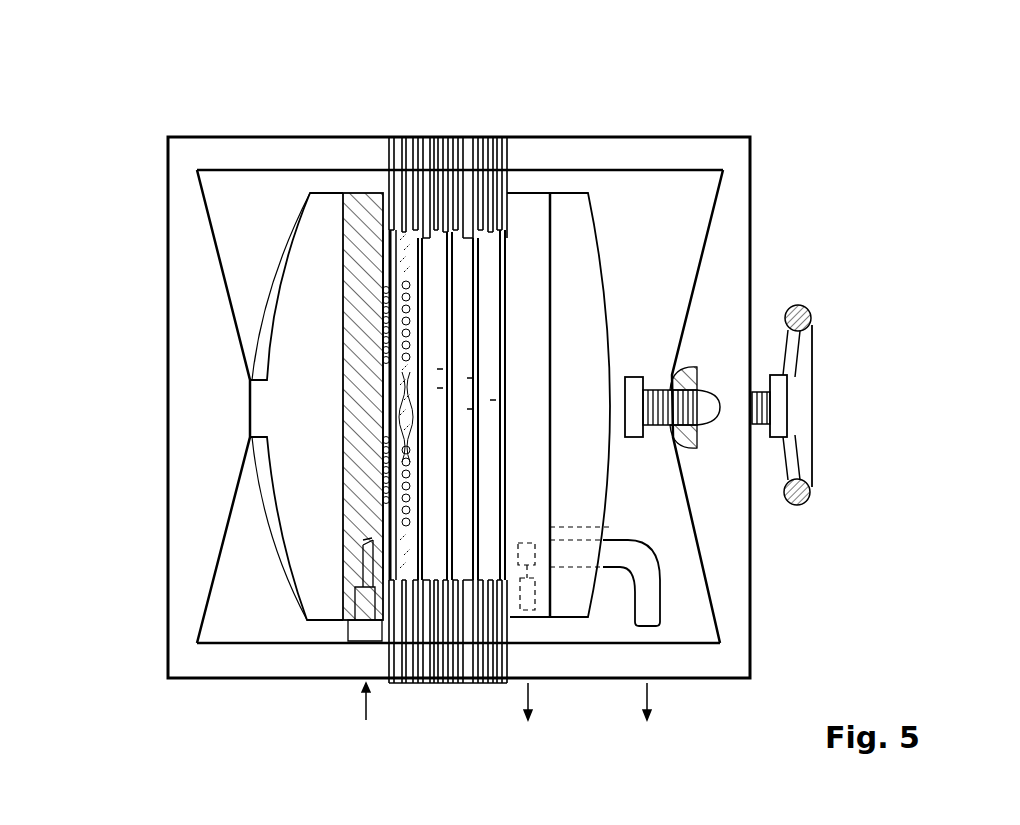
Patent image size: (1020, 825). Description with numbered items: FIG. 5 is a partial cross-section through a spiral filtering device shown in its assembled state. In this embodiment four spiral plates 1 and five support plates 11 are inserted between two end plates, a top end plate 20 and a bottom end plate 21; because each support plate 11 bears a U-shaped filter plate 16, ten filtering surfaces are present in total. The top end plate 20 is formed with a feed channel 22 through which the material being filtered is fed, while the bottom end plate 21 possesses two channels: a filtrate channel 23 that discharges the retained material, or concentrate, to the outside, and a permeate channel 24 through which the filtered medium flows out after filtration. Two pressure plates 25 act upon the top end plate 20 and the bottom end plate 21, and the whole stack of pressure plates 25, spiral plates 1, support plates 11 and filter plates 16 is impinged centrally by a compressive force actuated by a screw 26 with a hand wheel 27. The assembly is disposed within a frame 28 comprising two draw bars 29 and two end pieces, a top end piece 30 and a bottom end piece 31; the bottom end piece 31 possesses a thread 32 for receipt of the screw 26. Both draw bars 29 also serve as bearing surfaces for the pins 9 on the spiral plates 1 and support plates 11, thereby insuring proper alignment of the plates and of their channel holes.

The spiral plate 1 is at (500, 595).
The pins 9 is at (507, 137).
The support plate 11 is at (470, 411).
The filter plate 16 is at (383, 222).
The top end plate 20 is at (357, 463).
The bottom end plate 21 is at (530, 202).
The feed channel 22 is at (360, 562).
The filtrate channel 23 is at (555, 605).
The permeate channel 24 is at (537, 555).
The pressure plate 25 is at (302, 367).
The screw 26 is at (685, 367).
The hand wheel 27 is at (812, 308).
The frame 28 is at (167, 679).
The draw bars 29 is at (295, 145).
The top end piece 30 is at (202, 285).
The bottom end piece 31 is at (735, 188).
The thread 32 is at (700, 420).